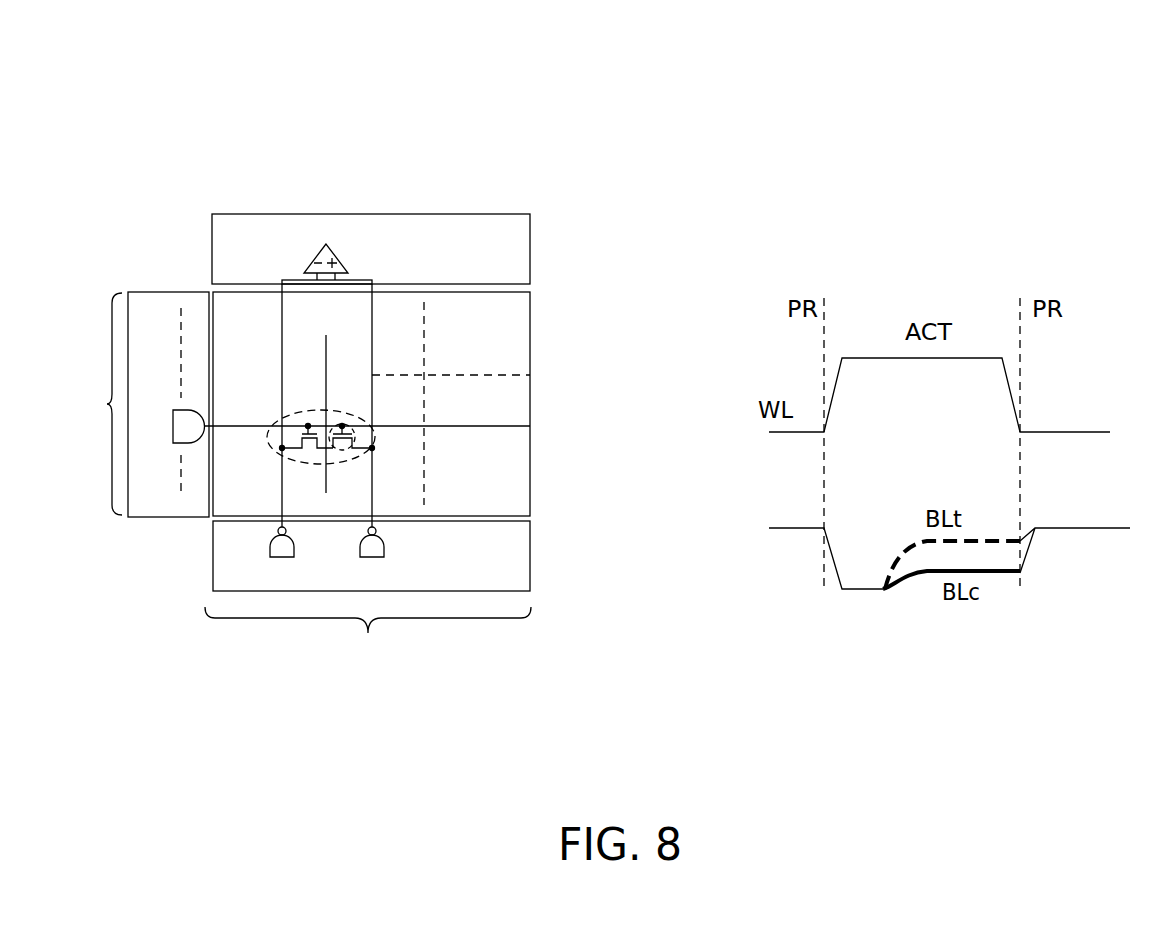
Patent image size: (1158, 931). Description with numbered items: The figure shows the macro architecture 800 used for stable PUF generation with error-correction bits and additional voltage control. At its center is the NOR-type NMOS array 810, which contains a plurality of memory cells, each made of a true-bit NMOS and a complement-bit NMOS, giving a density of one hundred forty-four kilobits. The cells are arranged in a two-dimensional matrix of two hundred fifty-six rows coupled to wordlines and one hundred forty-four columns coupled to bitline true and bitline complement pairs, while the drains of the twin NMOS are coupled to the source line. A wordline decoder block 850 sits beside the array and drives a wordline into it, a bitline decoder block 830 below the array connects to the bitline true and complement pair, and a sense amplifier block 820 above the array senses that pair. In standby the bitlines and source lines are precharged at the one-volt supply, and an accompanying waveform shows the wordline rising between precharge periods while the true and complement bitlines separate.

The macro architecture 800 is at (862, 80).
The NOR-type NMOS array 810 is at (530, 385).
The sense amplifier block 820 is at (371, 249).
The bitline decoder block 830 is at (371, 556).
The wordline decoder block 850 is at (329, 404).